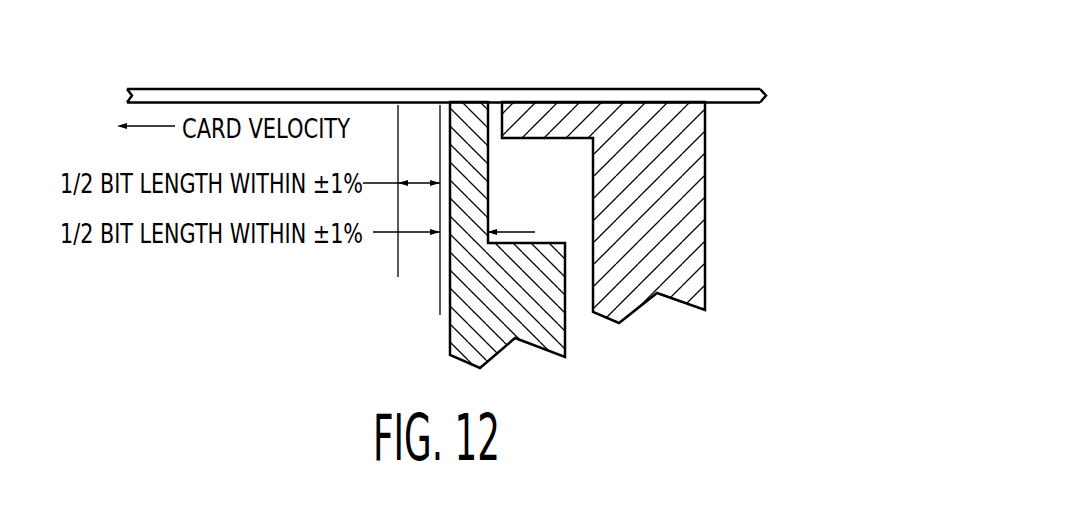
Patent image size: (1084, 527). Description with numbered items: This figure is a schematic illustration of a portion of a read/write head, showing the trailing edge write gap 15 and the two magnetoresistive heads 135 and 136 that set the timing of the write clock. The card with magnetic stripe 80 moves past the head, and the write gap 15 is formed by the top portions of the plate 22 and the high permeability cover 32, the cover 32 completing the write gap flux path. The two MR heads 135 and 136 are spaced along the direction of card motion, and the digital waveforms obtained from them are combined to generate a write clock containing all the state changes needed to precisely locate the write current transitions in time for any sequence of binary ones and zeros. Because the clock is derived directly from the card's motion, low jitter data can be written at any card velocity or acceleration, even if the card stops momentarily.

The trailing edge write gap 15 is at (486, 96).
The card with magnetic stripe 80 is at (647, 93).
The plate 22 is at (488, 335).
The high permeability cover 32 is at (695, 226).
The MR head 135 is at (440, 315).
The MR head 136 is at (398, 277).